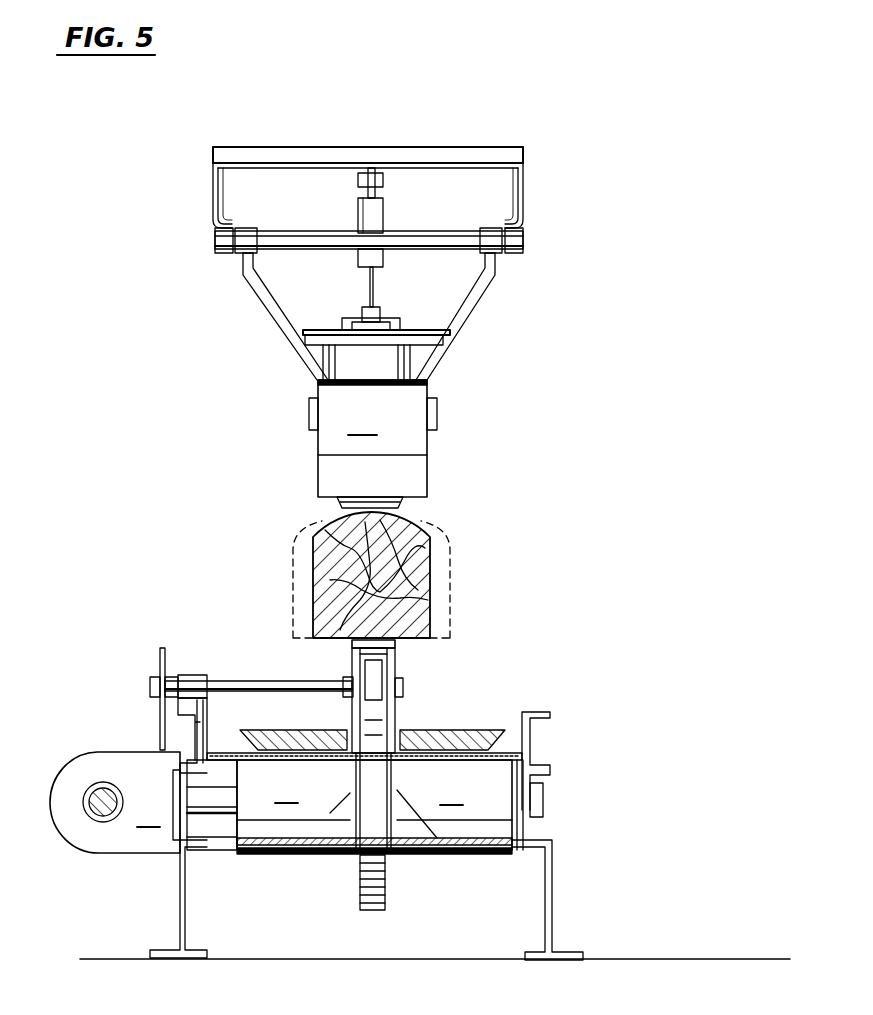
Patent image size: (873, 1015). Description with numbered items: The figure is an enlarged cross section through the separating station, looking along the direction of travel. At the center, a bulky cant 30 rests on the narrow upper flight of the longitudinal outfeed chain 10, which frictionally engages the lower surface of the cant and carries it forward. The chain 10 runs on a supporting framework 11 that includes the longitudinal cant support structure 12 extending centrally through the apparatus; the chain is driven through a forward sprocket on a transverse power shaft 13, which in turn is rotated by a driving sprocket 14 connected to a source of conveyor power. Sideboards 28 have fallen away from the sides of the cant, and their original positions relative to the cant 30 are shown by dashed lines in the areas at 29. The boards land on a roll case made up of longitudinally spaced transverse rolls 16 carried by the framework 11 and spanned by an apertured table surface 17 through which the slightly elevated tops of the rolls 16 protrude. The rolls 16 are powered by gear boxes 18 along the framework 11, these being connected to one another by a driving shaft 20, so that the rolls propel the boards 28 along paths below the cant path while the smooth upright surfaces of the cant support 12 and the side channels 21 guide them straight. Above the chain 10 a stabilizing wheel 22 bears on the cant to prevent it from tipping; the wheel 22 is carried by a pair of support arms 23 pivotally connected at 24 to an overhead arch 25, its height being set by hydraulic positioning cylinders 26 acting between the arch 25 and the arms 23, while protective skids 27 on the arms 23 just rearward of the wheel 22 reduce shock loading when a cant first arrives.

The longitudinal outfeed chain 10 is at (352, 650).
The supporting framework 11 is at (177, 874).
The longitudinal cant support structure 12 is at (396, 672).
The transverse power shaft 13 is at (247, 684).
The driving sprocket 14 is at (158, 666).
The transverse rolls 16 is at (355, 803).
The table surface 17 is at (220, 750).
The gear boxes 18 is at (115, 802).
The driving shaft 20 is at (93, 812).
The side channels 21 is at (197, 742).
The wheels 22 is at (405, 505).
The support arms 23 is at (259, 298).
The pivotal connection 24 is at (435, 242).
The overhead arch 25 is at (384, 146).
The hydraulic positioning cylinders 26 is at (358, 214).
The protective skids 27 is at (376, 413).
The sideboards 28 is at (262, 737).
The original sideboard positions 29 is at (303, 594).
The cant 30 is at (330, 530).